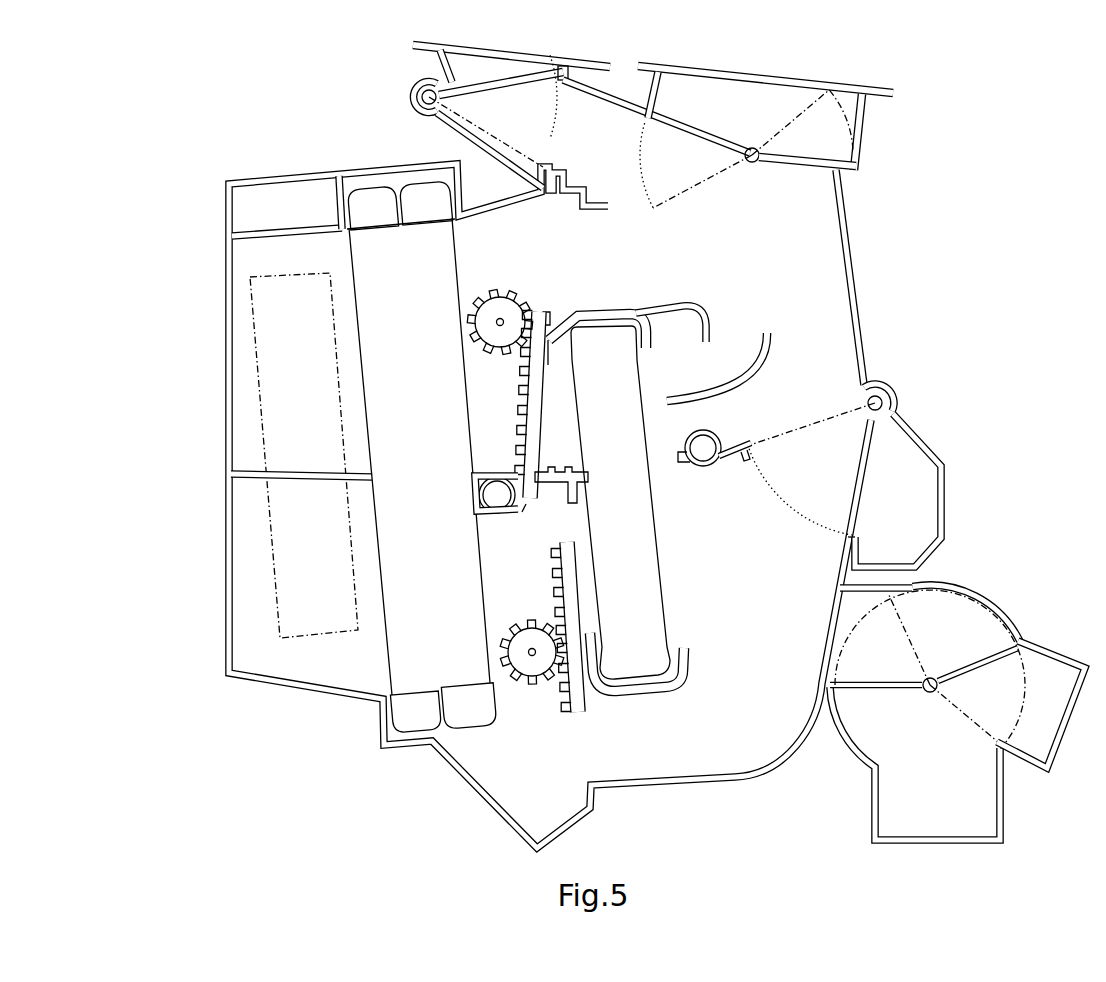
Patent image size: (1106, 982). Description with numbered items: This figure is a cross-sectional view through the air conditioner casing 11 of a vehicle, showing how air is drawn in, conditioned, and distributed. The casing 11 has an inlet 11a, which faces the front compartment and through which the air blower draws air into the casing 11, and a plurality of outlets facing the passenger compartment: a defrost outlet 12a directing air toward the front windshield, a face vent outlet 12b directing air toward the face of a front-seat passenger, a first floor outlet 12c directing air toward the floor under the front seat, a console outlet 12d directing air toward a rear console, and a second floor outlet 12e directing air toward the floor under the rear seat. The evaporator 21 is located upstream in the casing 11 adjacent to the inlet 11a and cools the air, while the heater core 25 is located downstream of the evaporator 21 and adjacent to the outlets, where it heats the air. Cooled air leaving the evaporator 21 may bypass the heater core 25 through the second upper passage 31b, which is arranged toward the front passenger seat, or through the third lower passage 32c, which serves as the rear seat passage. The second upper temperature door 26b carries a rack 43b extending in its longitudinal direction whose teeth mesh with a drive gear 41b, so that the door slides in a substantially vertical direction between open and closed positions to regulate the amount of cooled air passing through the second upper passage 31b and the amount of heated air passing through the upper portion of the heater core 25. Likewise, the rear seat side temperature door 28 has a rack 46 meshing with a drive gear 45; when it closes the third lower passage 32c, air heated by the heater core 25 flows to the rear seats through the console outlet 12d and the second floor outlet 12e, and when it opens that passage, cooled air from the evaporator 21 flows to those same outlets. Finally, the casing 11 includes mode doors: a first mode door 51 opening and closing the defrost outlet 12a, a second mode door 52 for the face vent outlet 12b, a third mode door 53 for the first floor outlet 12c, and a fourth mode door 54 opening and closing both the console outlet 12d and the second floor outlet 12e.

The casing 11 is at (683, 782).
The inlet 11a is at (261, 418).
The defrost outlet 12a is at (482, 63).
The face vent outlet 12b is at (708, 93).
The first floor outlet 12c is at (912, 497).
The console outlet 12d is at (1053, 687).
The second floor outlet 12e is at (935, 848).
The evaporator 21 is at (383, 330).
The heater core 25 is at (647, 528).
The second upper temperature door 26b is at (537, 440).
The rear seat side temperature door 28 is at (572, 580).
The second upper passage 31b is at (567, 270).
The third lower passage 32c is at (624, 752).
The drive gear 41b is at (498, 303).
The rack 43b is at (522, 390).
The drive gear 45 is at (520, 640).
The rack 46 is at (570, 713).
The first mode door 51 is at (527, 73).
The second mode door 52 is at (687, 127).
The third mode door 53 is at (873, 441).
The fourth mode door 54 is at (993, 650).